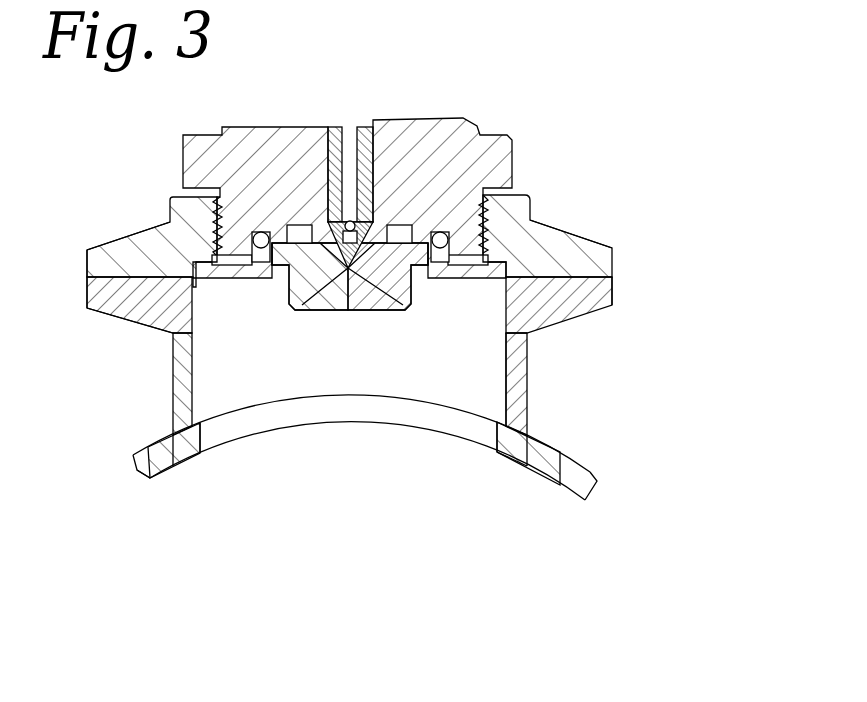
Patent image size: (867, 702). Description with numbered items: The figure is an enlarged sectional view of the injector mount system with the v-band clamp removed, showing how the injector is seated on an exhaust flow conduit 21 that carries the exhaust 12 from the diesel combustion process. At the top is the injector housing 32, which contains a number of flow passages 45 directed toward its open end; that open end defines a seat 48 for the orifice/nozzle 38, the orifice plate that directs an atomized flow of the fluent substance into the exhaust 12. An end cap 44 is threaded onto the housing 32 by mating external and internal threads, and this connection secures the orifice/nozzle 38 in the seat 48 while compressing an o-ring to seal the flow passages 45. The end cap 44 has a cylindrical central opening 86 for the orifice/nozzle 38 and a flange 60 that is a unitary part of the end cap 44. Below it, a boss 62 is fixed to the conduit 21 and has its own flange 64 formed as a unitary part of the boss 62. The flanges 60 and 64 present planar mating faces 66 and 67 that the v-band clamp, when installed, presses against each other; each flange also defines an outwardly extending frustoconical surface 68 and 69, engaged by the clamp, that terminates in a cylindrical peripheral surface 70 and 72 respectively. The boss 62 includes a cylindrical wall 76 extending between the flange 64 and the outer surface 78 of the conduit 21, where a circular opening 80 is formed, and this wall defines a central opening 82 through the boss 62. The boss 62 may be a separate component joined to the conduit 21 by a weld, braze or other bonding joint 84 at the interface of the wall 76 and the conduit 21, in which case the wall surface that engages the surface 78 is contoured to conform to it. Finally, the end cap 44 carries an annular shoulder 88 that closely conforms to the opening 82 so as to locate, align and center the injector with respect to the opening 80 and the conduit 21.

The exhaust 12 is at (363, 469).
The exhaust flow conduit 21 is at (175, 462).
The housing 32 is at (465, 107).
The orifice/nozzle 38 is at (393, 322).
The end cap 44 is at (535, 191).
The flow passages 45 is at (338, 228).
The seat 48 is at (431, 256).
The flange 60 is at (148, 245).
The boss 62 is at (548, 341).
The flange 64 is at (115, 304).
The mating face 66 is at (90, 292).
The mating face 67 is at (88, 256).
The frustoconical surface 68 is at (108, 228).
The frustoconical surface 69 is at (137, 313).
The peripheral surface 70 is at (612, 249).
The peripheral surface 72 is at (612, 290).
The cylindrical wall 76 is at (522, 367).
The outer surface 78 is at (170, 437).
The circular opening 80 is at (497, 428).
The central opening 82 is at (506, 346).
The bonding joint 84 is at (536, 425).
The central opening 86 is at (264, 250).
The annular shoulder 88 is at (186, 281).